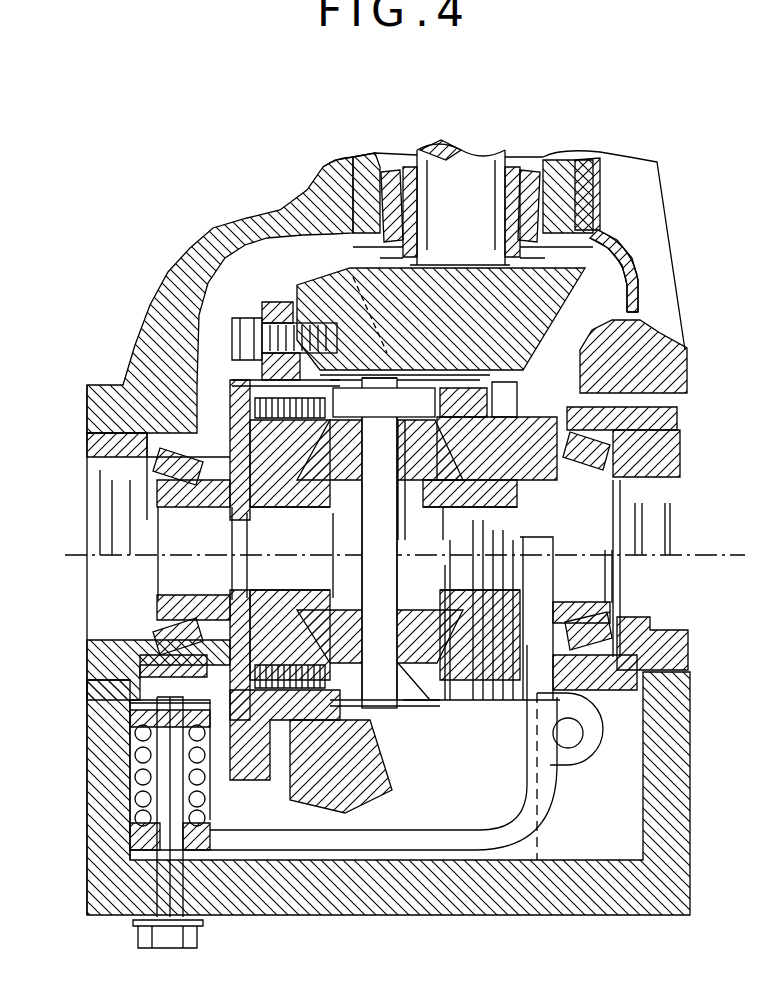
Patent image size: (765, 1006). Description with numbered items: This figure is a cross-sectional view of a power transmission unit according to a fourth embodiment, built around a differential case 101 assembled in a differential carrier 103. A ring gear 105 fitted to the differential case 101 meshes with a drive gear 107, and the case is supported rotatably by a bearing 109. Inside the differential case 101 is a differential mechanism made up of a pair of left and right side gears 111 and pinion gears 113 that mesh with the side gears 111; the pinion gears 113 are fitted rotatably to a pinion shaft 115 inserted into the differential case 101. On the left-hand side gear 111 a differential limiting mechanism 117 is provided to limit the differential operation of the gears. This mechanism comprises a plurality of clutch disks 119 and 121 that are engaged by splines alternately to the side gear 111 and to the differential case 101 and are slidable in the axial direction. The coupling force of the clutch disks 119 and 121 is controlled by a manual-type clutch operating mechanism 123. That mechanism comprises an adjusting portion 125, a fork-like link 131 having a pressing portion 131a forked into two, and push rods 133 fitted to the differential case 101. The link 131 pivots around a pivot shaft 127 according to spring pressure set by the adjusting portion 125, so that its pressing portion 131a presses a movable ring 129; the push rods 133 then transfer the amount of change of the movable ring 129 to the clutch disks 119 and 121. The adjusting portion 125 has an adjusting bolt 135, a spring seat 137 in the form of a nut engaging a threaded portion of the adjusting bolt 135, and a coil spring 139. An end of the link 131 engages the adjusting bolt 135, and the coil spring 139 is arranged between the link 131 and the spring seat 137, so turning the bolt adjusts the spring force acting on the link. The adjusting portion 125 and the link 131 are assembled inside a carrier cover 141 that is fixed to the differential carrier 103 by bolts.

The differential case 101 is at (260, 302).
The differential carrier 103 is at (207, 227).
The ring gear 105 is at (321, 287).
The drive gear 107 is at (597, 220).
The bearing 109 is at (150, 611).
The side gears 111 is at (290, 493).
The pinion gears 113 is at (213, 380).
The pinion shaft 115 is at (370, 520).
The differential limiting mechanism 117 is at (287, 700).
The clutch disks 119 is at (307, 713).
The clutch disks 121 is at (417, 677).
The clutch operating mechanism 123 is at (527, 840).
The adjusting portion 125 is at (128, 800).
The pivot shaft 127 is at (573, 735).
The movable ring 129 is at (503, 610).
The fork-like link 131 is at (447, 840).
The pressing portion 131a is at (533, 690).
The push rods 133 is at (423, 403).
The adjusting bolt 135 is at (167, 767).
The spring seat 137 is at (88, 683).
The coil spring 139 is at (130, 717).
The carrier cover 141 is at (643, 910).